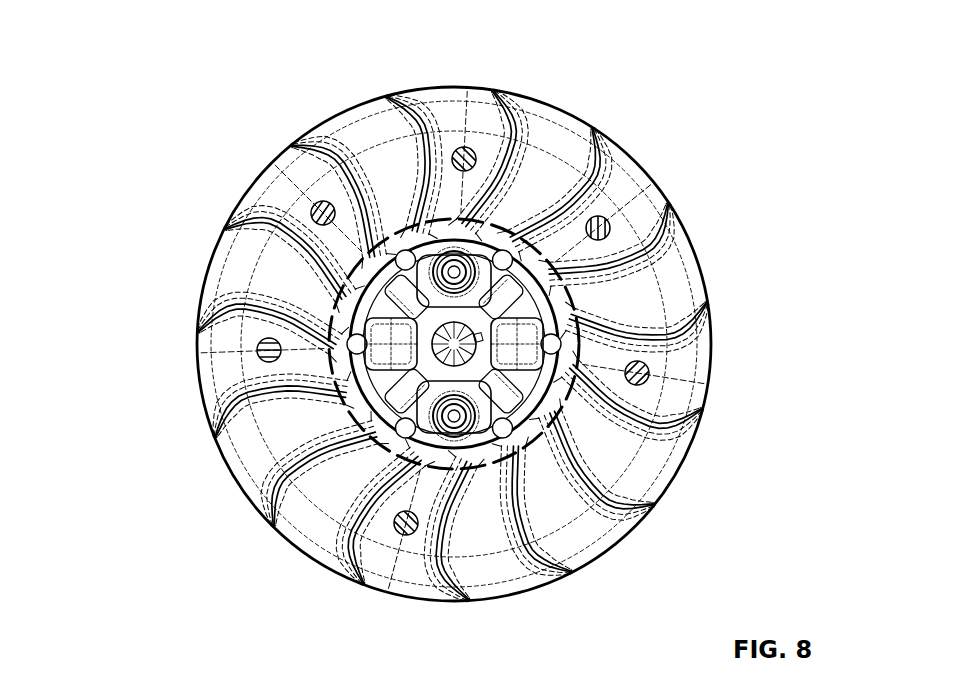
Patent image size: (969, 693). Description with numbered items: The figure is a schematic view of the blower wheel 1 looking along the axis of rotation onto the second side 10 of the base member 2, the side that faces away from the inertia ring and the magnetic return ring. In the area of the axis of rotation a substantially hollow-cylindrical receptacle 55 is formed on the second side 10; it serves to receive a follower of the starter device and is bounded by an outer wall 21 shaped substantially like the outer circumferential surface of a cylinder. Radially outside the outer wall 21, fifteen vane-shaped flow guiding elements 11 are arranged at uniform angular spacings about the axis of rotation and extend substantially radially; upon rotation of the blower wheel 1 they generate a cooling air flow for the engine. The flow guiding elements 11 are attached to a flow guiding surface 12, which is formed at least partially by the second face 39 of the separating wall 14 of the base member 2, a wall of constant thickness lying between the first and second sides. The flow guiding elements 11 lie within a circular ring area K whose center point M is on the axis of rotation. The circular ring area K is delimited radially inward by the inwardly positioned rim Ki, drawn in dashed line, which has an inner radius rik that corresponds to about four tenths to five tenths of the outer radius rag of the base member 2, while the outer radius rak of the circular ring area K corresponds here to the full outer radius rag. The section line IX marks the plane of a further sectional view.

The blower wheel 1 is at (206, 568).
The base member 2 is at (211, 184).
The second side 10 is at (212, 369).
The flow guiding elements 11 is at (670, 223).
The flow guiding surface 12 is at (621, 220).
The separating wall 14 is at (291, 431).
The second face 39 is at (259, 469).
The receptacle 55 is at (377, 407).
The outer wall 21 is at (422, 447).
The circular ring area K is at (666, 263).
The inwardly positioned rim Ki is at (522, 370).
The center point M is at (501, 214).
The inner radius rik is at (454, 344).
The outer radius rak is at (454, 344).
The outer radius rag is at (454, 344).
The section line IX is at (630, 623).